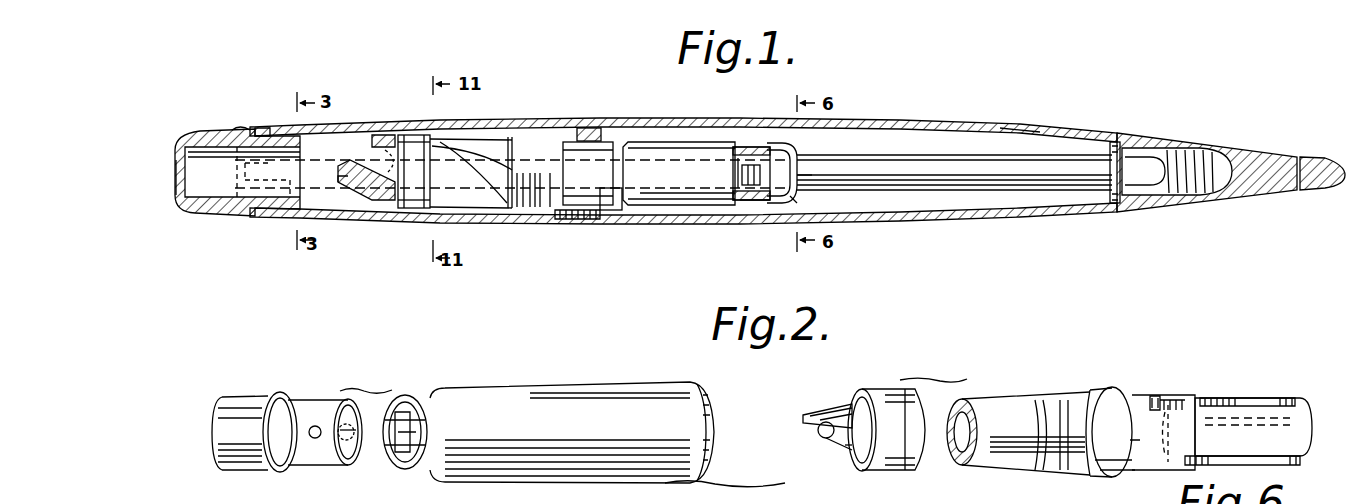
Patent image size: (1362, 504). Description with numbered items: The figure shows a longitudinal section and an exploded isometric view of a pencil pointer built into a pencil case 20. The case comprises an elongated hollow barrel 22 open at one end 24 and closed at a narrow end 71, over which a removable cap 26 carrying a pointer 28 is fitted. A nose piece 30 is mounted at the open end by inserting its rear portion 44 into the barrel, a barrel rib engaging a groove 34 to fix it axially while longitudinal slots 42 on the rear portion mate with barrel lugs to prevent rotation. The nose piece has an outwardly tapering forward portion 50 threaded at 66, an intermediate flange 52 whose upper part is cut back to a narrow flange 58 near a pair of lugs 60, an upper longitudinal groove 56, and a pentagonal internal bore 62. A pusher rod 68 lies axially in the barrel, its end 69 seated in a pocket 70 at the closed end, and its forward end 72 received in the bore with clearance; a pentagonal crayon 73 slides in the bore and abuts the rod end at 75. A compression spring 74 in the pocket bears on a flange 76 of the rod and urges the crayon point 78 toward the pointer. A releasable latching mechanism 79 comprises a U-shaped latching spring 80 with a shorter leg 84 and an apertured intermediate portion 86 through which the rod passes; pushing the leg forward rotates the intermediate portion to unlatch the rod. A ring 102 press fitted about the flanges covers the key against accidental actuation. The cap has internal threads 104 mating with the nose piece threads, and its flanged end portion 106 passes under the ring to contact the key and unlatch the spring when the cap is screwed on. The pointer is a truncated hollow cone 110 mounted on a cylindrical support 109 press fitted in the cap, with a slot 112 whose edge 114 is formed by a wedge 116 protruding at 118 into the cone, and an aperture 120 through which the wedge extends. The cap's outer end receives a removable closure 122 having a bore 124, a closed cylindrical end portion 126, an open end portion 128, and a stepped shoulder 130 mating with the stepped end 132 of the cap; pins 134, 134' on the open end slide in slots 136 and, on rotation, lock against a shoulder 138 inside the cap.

In FIG. 1, the pencil case 20 is at (960, 122).
In FIG. 1, the barrel 22 is at (1020, 128).
In FIG. 1, the open end of barrel 24 is at (592, 128).
In FIG. 1, the cap 26 is at (340, 122).
In FIG. 2, the cap 26 is at (565, 384).
In FIG. 1, the pointer 28 is at (345, 186).
In FIG. 2, the pointer 28 is at (880, 388).
In FIG. 1, the nose piece 30 is at (460, 136).
In FIG. 2, the nose piece 30 is at (1140, 392).
In FIG. 2, the groove 34 is at (1176, 400).
In FIG. 1, the longitudinal slots 42 is at (690, 192).
In FIG. 2, the longitudinal slots 42 is at (1290, 452).
In FIG. 1, the rear portion of nose piece 44 is at (712, 170).
In FIG. 2, the rear portion of nose piece 44 is at (1282, 466).
In FIG. 2, the forward portion of nose piece 50 is at (1010, 392).
In FIG. 1, the intermediate flange 52 is at (605, 202).
In FIG. 2, the intermediate flange 52 is at (1135, 471).
In FIG. 2, the upper longitudinal groove 56 is at (1270, 398).
In FIG. 1, the narrow flange 58 is at (578, 130).
In FIG. 2, the narrow flange 58 is at (1112, 386).
In FIG. 2, the lugs 60 is at (1150, 395).
In FIG. 2, the internal bore 62 is at (952, 425).
In FIG. 1, the threads 66 is at (520, 186).
In FIG. 2, the threads 66 is at (1065, 460).
In FIG. 1, the pusher rod 68 is at (918, 163).
In FIG. 1, the end of pusher rod 69 is at (1140, 168).
In FIG. 1, the pocket 70 is at (1176, 146).
In FIG. 1, the closed narrow end of barrel 71 is at (1250, 148).
In FIG. 1, the forward end of pusher rod 72 is at (760, 170).
In FIG. 1, the crayon 73 is at (752, 187).
In FIG. 1, the compression spring 74 is at (1210, 186).
In FIG. 1, the abutment 75 is at (748, 165).
In FIG. 1, the flange on rod 76 is at (1115, 141).
In FIG. 1, the point of pencil 78 is at (380, 134).
In FIG. 1, the releasable latching mechanism 79 is at (802, 174).
In FIG. 1, the U-shaped latching spring 80 is at (795, 150).
In FIG. 1, the shorter leg of latching spring 84 is at (765, 202).
In FIG. 1, the intermediate portion of latching spring 86 is at (800, 196).
In FIG. 1, the ring 102 is at (575, 220).
In FIG. 1, the internal threads of cap 104 is at (532, 192).
In FIG. 2, the flanged end portion of cap 106 is at (706, 400).
In FIG. 1, the cylindrical support 109 is at (412, 140).
In FIG. 2, the cylindrical support 109 is at (905, 458).
In FIG. 2, the truncated hollow cone 110 is at (845, 450).
In FIG. 2, the slot 112 is at (838, 414).
In FIG. 2, the cutter edge 114 is at (820, 414).
In FIG. 2, the wedge 116 is at (801, 419).
In FIG. 2, the protrusion of cutter edge 118 is at (840, 432).
In FIG. 2, the aperture of cone 120 is at (818, 432).
In FIG. 1, the closure 122 is at (215, 130).
In FIG. 2, the closure 122 is at (247, 394).
In FIG. 1, the bore of closure 124 is at (215, 190).
In FIG. 2, the bore of closure 124 is at (346, 450).
In FIG. 1, the closed cylindrical end portion 126 is at (190, 210).
In FIG. 2, the closed cylindrical end portion 126 is at (285, 392).
In FIG. 2, the open end portion of closure 128 is at (310, 410).
In FIG. 1, the stepped shoulder of closure 130 is at (238, 128).
In FIG. 1, the stepped end of cap 132 is at (255, 146).
In FIG. 2, the stepped end of cap 132 is at (410, 470).
In FIG. 1, the pins 134 is at (358, 156).
In FIG. 2, the pin 134' is at (319, 455).
In FIG. 1, the slots in cap 136 is at (262, 196).
In FIG. 2, the slots in cap 136 is at (412, 396).
In FIG. 1, the shoulder on cap inner surface 138 is at (287, 126).